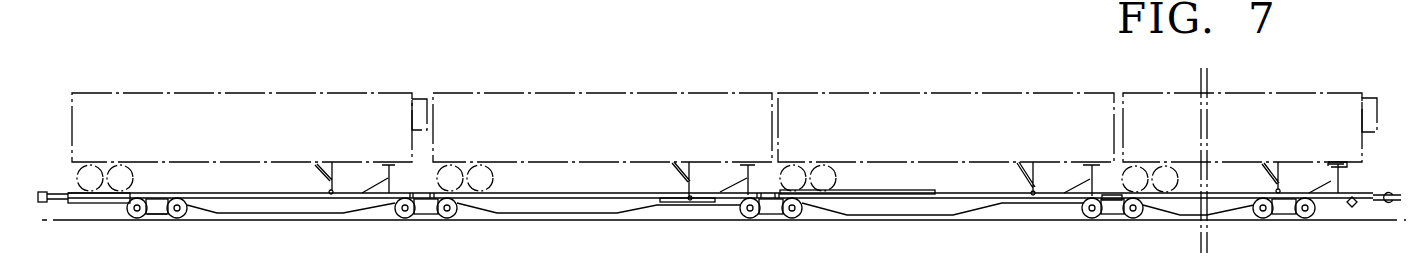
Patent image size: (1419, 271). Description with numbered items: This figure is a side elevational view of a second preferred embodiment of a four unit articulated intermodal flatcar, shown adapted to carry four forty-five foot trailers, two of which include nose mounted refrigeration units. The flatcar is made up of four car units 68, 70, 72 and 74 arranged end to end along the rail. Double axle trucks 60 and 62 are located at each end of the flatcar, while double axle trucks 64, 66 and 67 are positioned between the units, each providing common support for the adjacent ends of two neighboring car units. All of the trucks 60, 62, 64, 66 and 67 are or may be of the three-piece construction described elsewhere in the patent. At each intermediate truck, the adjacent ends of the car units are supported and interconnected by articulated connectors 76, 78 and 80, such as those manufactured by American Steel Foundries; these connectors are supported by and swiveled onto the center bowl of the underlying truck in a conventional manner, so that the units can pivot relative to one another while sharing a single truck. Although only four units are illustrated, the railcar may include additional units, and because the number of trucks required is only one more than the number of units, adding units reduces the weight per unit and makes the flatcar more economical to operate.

The double axle truck 60 is at (164, 227).
The double axle truck 62 is at (1291, 229).
The double axle truck 64 is at (434, 227).
The double axle truck 66 is at (777, 227).
The double axle truck 67 is at (1118, 227).
The car unit 68 is at (303, 207).
The car unit 70 is at (604, 205).
The car unit 72 is at (927, 207).
The car unit 74 is at (1182, 210).
The articulated connector 76 is at (427, 193).
The articulated connector 78 is at (772, 193).
The articulated connector 80 is at (1113, 193).